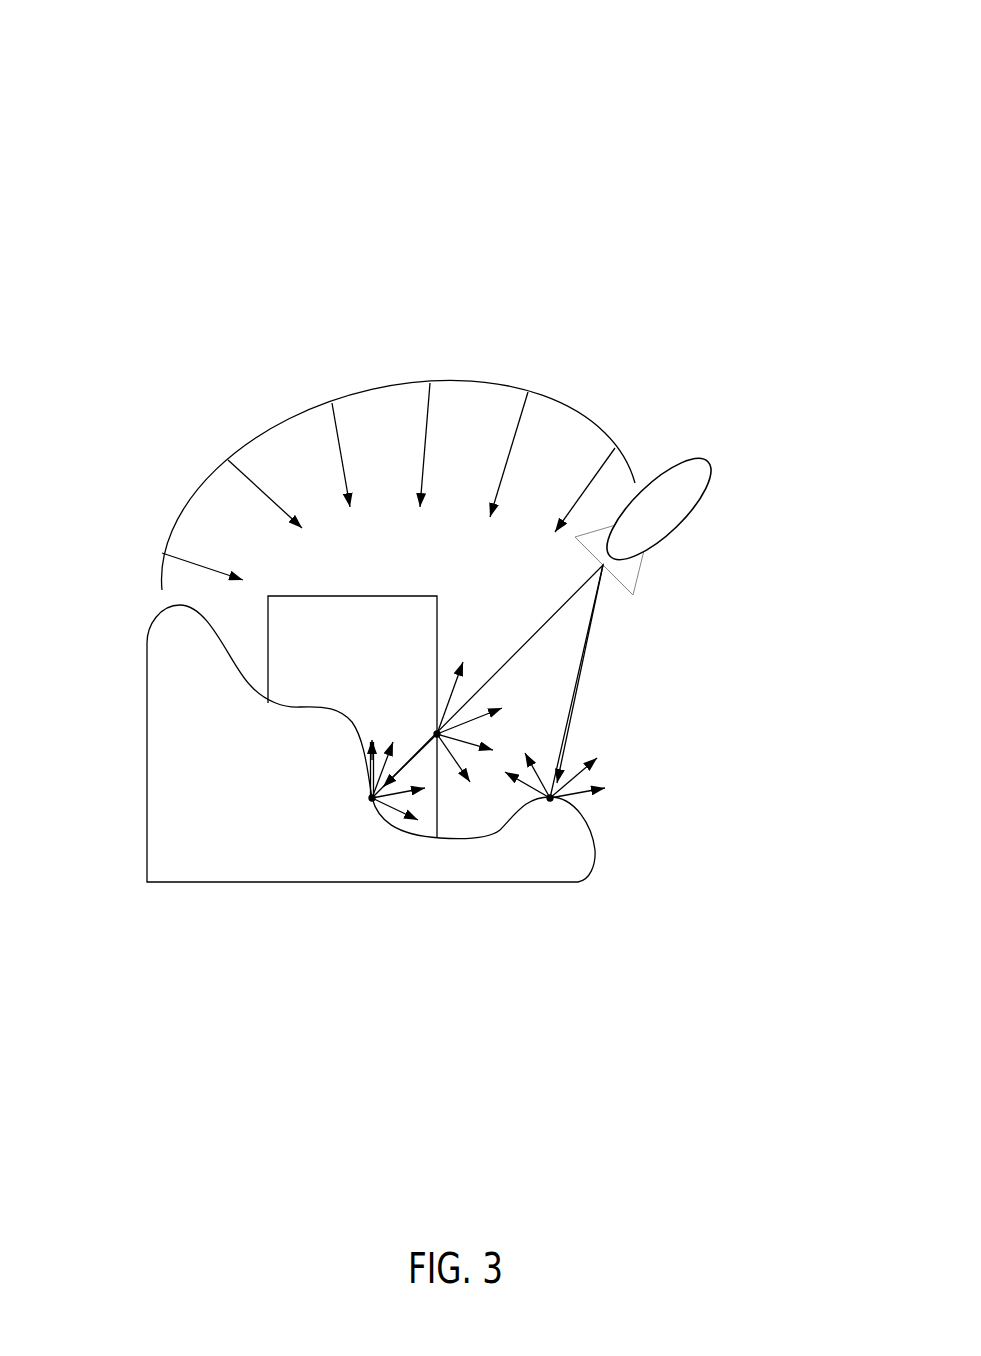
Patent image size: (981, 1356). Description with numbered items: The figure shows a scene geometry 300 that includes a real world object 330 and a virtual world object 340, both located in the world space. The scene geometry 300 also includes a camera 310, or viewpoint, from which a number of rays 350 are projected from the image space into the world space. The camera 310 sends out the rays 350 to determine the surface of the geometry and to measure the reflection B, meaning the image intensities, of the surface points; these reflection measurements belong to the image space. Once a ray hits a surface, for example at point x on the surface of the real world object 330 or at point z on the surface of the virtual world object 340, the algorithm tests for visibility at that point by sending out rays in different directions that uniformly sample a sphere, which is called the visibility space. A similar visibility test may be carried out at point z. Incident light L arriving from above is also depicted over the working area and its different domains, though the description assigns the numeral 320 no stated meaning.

The scene geometry 300 is at (167, 51).
The camera 310 is at (693, 477).
The incident light 320 is at (387, 388).
The real world object 330 is at (305, 865).
The virtual world object 340 is at (400, 647).
The rays 350 is at (537, 637).